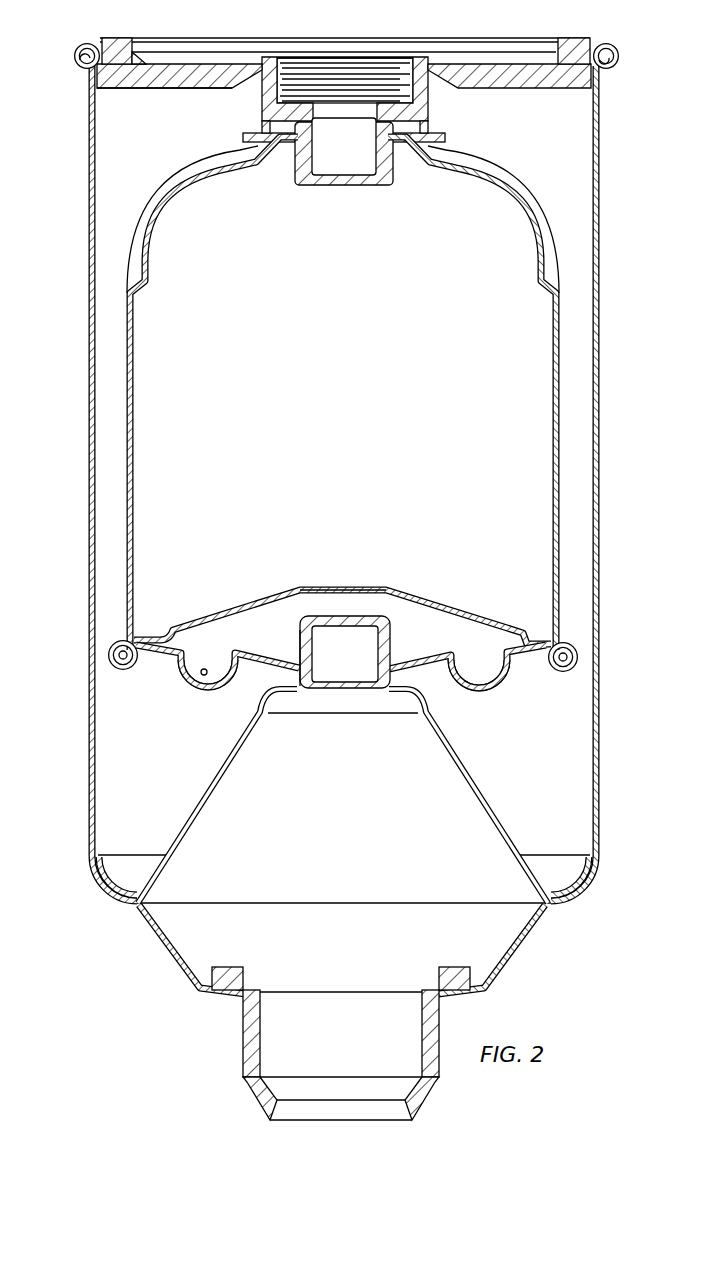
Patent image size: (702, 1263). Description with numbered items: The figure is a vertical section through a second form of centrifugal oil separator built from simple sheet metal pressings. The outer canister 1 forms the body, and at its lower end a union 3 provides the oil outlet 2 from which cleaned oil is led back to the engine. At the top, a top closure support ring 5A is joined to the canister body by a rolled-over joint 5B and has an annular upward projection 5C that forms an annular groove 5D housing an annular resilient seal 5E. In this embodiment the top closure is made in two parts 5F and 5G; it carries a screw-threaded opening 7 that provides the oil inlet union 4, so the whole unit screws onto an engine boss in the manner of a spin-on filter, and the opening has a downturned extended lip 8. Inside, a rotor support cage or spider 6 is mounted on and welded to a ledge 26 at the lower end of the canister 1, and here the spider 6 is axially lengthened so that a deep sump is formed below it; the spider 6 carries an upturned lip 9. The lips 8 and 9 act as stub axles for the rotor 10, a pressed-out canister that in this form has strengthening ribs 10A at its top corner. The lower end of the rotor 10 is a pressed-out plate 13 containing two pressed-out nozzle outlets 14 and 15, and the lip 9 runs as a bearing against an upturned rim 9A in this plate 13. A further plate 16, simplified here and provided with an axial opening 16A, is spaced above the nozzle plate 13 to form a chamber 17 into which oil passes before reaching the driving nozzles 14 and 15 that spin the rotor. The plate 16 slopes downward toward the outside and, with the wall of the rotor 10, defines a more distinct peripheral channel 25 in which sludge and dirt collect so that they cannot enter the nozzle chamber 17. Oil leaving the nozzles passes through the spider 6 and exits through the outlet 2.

The outer canister 1 is at (597, 360).
The oil outlet 2 is at (280, 1056).
The union 3 is at (440, 1060).
The oil inlet union 4 is at (362, 62).
The top closure support ring 5A is at (178, 63).
The rolled-over joint 5B is at (80, 68).
The annular upward projection 5C is at (140, 54).
The annular groove 5D is at (90, 46).
The annular resilient seal 5E is at (112, 38).
The top closure part 5F is at (158, 89).
The top closure part 5G is at (262, 110).
The rotor support cage 6 is at (262, 735).
The screw-threaded opening 7 is at (262, 95).
The downturned extended lip 8 is at (318, 150).
The upturned lip 9 is at (316, 652).
The upturned rim 9A is at (302, 642).
The rotor 10 is at (135, 445).
The strengthening ribs 10A is at (162, 178).
The pressed out plate 13 is at (152, 656).
The nozzle outlet 14 is at (212, 692).
The nozzle outlet 15 is at (500, 690).
The plate 16 is at (240, 612).
The axial opening 16A is at (360, 588).
The chamber 17 is at (252, 632).
The peripheral channel 25 is at (128, 640).
The ledge 26 is at (100, 900).